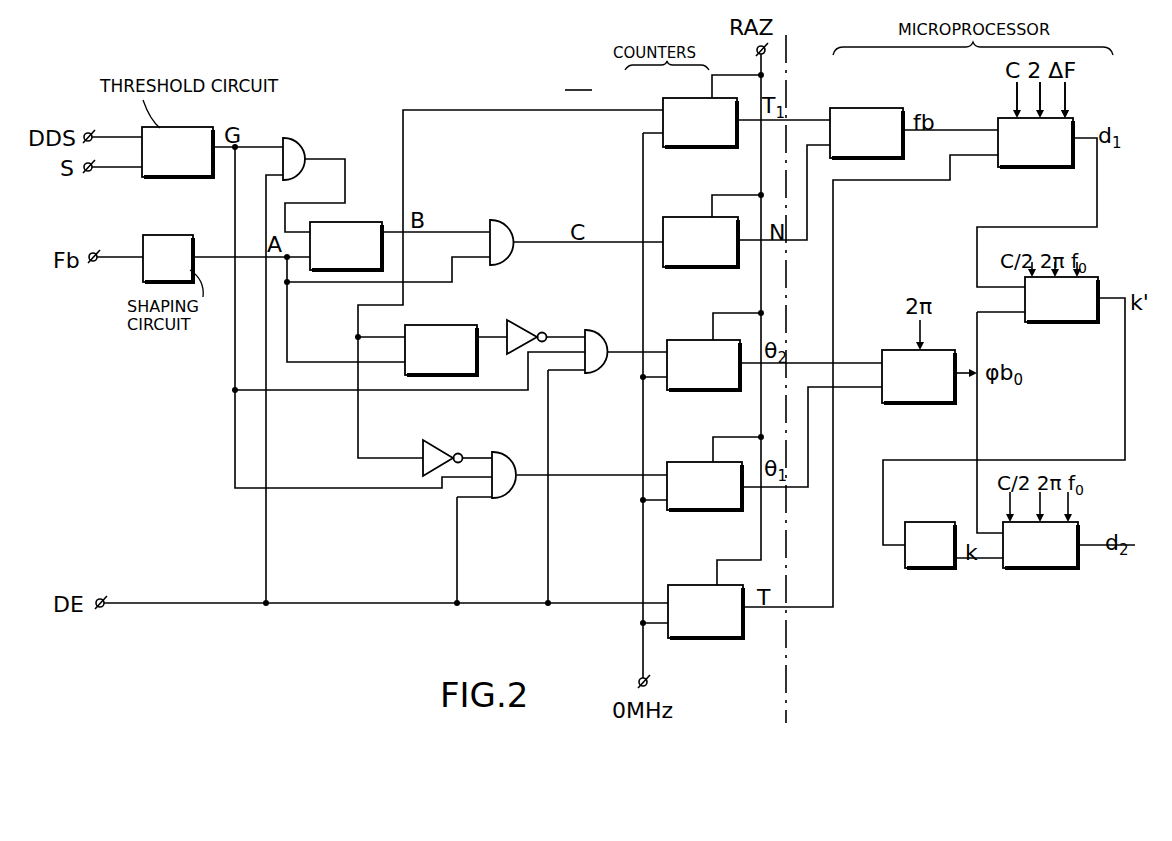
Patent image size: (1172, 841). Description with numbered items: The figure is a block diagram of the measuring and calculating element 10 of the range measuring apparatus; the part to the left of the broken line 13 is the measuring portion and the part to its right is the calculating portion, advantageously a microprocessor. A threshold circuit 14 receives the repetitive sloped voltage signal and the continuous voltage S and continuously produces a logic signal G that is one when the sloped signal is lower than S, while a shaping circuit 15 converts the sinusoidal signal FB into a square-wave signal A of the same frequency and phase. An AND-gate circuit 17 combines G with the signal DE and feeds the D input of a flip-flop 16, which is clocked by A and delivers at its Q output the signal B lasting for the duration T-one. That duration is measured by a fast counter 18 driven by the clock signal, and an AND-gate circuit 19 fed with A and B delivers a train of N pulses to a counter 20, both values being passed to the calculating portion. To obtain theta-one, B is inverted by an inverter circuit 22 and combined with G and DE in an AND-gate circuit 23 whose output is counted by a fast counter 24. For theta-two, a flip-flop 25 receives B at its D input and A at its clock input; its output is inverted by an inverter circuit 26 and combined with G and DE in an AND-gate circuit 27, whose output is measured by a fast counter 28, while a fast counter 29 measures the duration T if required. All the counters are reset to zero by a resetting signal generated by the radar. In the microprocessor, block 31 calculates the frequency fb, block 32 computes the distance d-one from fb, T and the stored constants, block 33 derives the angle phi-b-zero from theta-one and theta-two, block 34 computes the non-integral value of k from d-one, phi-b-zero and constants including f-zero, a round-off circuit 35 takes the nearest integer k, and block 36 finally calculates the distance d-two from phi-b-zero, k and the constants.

The measuring and calculating element 10 is at (580, 79).
The broken line 13 is at (790, 672).
The threshold circuit 14 is at (169, 136).
The shaping circuit 15 is at (160, 247).
The flip-flop 16 is at (348, 236).
The AND-gate circuit 17 is at (297, 153).
The fast counter 18 is at (686, 112).
The AND-gate circuit 19 is at (500, 240).
The counter 20 is at (682, 225).
The inverter circuit 22 is at (433, 452).
The AND-gate circuit 23 is at (503, 460).
The fast counter 24 is at (695, 470).
The flip-flop 25 is at (442, 330).
The inverter circuit 26 is at (523, 336).
The AND-gate circuit 27 is at (596, 330).
The fast counter 28 is at (697, 350).
The fast counter 29 is at (692, 600).
The frequency calculating block 31 is at (860, 118).
The distance calculating block 32 is at (1020, 158).
The angle calculating block 33 is at (923, 392).
The non-integral k calculating block 34 is at (1055, 310).
The round-off circuit 35 is at (930, 565).
The second distance calculating block 36 is at (1036, 560).